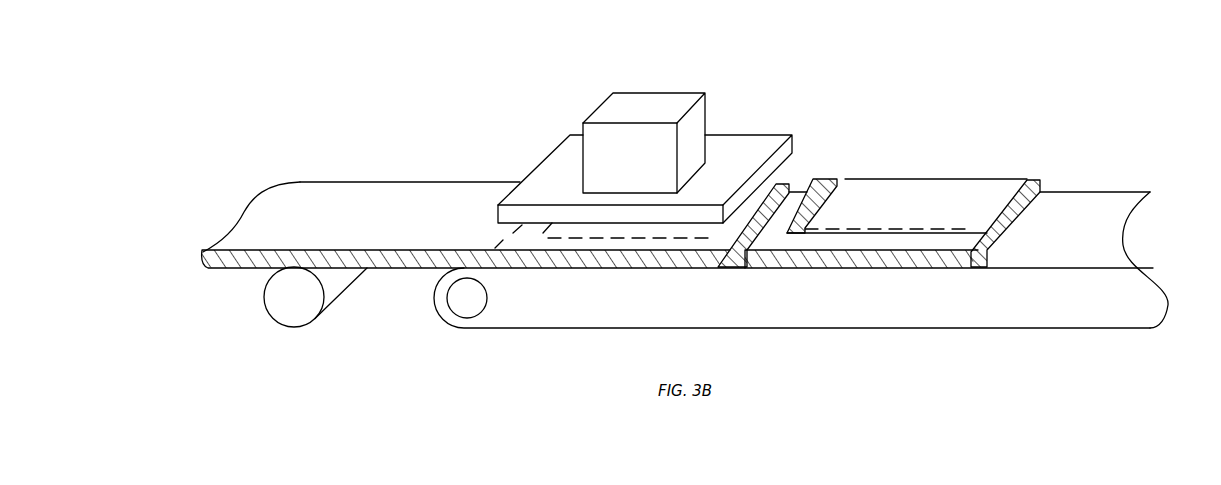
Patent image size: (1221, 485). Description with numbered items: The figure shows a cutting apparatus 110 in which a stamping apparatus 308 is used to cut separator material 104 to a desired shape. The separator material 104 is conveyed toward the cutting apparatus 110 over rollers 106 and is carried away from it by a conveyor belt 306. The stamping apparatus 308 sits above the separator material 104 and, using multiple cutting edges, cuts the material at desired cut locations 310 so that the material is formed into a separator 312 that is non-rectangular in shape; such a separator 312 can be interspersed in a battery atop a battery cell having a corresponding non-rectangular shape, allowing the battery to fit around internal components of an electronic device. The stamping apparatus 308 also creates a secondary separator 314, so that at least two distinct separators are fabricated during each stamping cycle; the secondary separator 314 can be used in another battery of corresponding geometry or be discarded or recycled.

The cutting apparatus 110 is at (188, 76).
The separator material 104 is at (685, 255).
The rollers 106 is at (295, 328).
The conveyor belt 306 is at (792, 298).
The stamping apparatus 308 is at (596, 108).
The cut locations 310 is at (548, 237).
The separator 312 is at (833, 180).
The secondary separator 314 is at (1010, 178).